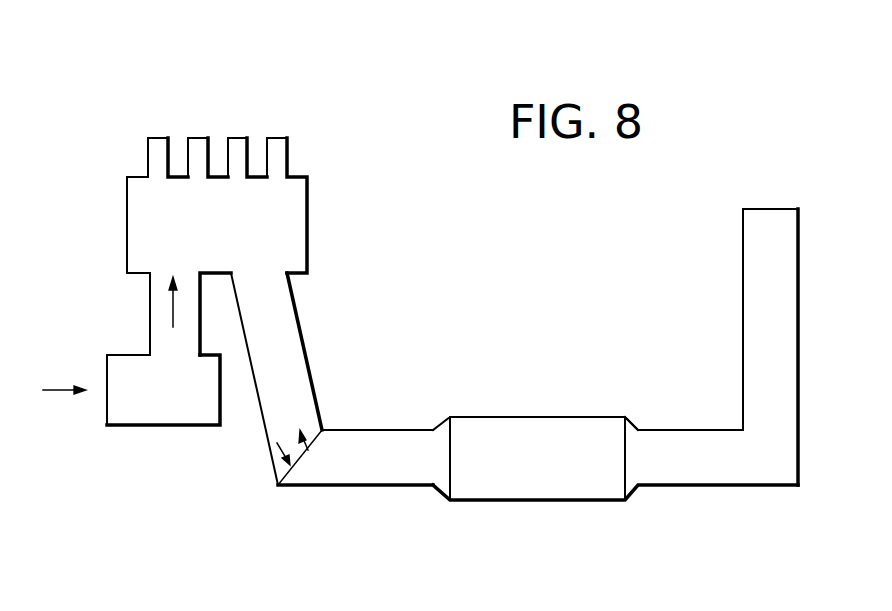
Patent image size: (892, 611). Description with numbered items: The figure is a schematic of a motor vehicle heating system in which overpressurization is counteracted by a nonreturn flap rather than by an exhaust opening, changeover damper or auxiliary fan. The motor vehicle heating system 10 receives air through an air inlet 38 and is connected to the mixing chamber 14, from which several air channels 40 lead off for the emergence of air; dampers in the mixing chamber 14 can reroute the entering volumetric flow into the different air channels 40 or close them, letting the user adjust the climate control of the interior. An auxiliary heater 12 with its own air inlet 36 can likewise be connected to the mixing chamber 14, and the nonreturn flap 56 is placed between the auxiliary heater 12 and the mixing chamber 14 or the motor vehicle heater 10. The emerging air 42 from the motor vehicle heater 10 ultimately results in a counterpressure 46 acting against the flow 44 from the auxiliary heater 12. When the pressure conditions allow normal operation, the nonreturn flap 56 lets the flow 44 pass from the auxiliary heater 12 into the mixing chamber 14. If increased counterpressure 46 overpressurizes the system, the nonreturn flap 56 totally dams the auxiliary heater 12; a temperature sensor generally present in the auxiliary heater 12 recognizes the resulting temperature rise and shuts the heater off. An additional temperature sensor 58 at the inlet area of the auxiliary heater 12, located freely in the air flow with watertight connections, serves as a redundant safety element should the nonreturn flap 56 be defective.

The motor vehicle heating system 10 is at (157, 412).
The auxiliary heater 12 is at (543, 483).
The mixing chamber 14 is at (138, 218).
The air inlet 36 is at (762, 255).
The air inlet 38 is at (60, 393).
The air channels 40 is at (197, 140).
The emerging air 42 is at (173, 308).
The flow 44 is at (333, 455).
The counterpressure 46 is at (277, 443).
The nonreturn flap 56 is at (307, 455).
The additional temperature sensor 58 is at (628, 428).